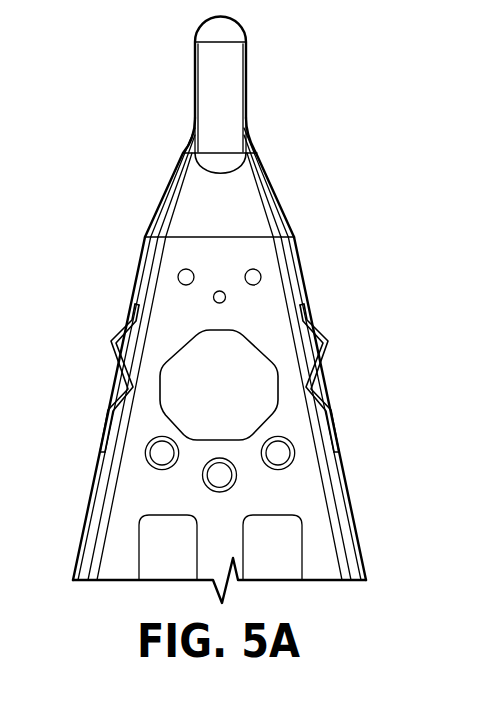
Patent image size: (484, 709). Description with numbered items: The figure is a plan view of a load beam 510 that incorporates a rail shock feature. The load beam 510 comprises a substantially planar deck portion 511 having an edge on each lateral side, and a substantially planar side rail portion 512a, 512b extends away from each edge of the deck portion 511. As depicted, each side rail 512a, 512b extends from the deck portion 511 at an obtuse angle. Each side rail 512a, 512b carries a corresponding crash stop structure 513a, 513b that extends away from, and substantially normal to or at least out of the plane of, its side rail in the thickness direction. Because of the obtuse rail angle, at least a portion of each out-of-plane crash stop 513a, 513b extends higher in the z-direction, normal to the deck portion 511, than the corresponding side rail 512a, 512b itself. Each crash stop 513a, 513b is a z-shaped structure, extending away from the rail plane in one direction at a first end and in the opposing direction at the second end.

The load beam 510 is at (247, 190).
The deck portion 511 is at (273, 305).
The side rail portion 512a is at (150, 268).
The side rail portion 512b is at (290, 257).
The crash stop structure 513a is at (118, 363).
The crash stop structure 513b is at (324, 351).